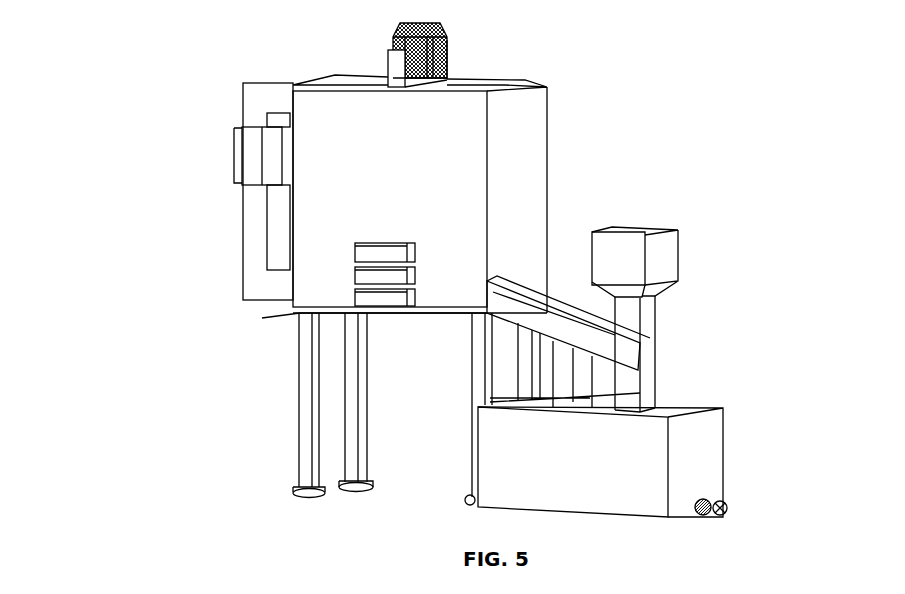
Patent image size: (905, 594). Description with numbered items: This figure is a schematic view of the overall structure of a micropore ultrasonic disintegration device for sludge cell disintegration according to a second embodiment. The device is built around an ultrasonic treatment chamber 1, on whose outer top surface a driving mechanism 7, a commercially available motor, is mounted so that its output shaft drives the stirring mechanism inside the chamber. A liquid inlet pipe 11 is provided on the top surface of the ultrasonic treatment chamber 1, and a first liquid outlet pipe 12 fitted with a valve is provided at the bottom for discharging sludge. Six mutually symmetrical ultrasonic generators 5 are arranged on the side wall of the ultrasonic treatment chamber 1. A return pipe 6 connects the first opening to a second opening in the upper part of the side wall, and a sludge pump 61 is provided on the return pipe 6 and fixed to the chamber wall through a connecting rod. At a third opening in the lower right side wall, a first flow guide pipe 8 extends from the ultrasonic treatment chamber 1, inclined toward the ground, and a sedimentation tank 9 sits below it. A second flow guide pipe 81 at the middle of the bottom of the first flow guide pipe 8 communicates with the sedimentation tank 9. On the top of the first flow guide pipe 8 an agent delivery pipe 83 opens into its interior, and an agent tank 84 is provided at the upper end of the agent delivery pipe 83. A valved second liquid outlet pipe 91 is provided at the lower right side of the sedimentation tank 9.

The ultrasonic treatment chamber 1 is at (500, 88).
The ultrasonic generators 5 is at (365, 255).
The return pipe 6 is at (253, 97).
The sludge pump 61 is at (248, 153).
The driving mechanism 7 is at (393, 38).
The liquid inlet pipe 11 is at (447, 58).
The first liquid outlet pipe 12 is at (299, 313).
The first flow guide pipe 8 is at (544, 313).
The second flow guide pipe 81 is at (563, 400).
The agent delivery pipe 83 is at (633, 327).
The agent tank 84 is at (655, 247).
The sedimentation tank 9 is at (692, 462).
The second liquid outlet pipe 91 is at (723, 504).